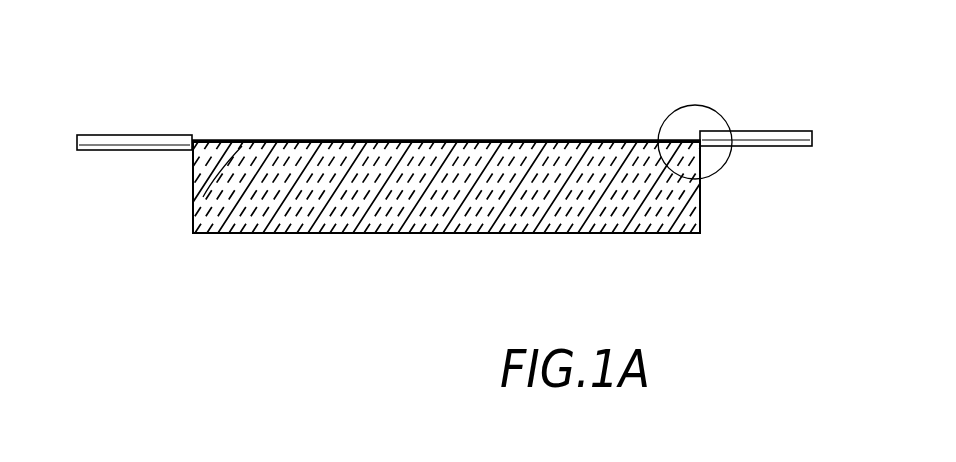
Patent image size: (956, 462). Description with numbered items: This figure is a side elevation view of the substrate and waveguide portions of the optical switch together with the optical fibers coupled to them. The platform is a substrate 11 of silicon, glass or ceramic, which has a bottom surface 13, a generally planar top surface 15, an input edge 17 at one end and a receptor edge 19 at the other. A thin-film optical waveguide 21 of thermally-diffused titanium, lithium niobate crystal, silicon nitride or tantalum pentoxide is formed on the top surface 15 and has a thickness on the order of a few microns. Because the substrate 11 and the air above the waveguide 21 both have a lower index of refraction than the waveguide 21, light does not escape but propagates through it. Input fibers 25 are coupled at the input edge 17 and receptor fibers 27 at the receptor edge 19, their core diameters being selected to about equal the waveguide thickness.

The substrate 11 is at (240, 214).
The bottom surface 13 is at (375, 234).
The top surface 15 is at (205, 196).
The input edge 17 is at (192, 173).
The receptor edge 19 is at (701, 190).
The thin-film optical waveguide 21 is at (405, 140).
The input fibers 25 is at (103, 136).
The receptor fibers 27 is at (738, 131).